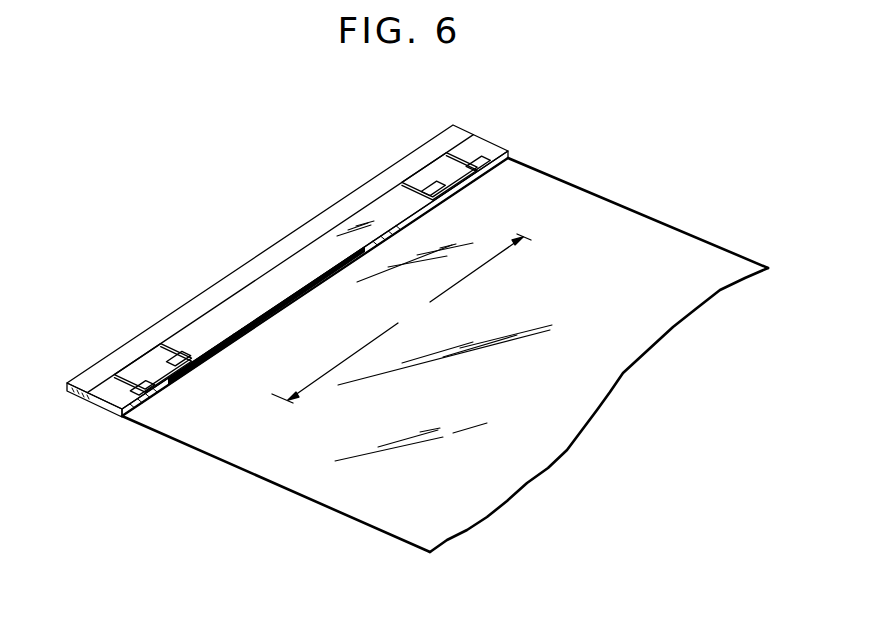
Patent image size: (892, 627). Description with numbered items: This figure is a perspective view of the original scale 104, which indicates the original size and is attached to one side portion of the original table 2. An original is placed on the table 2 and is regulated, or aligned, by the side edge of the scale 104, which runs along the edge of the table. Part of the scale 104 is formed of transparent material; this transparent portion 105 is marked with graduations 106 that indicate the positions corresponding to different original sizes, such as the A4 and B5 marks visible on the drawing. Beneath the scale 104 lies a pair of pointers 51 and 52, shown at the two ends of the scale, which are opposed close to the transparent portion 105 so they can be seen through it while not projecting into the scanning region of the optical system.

The original table 2 is at (624, 230).
The pointer 51 is at (417, 182).
The pointer 52 is at (175, 345).
The original scale 104 is at (192, 318).
The transparent portion 105 is at (277, 288).
The graduations 106 is at (118, 396).